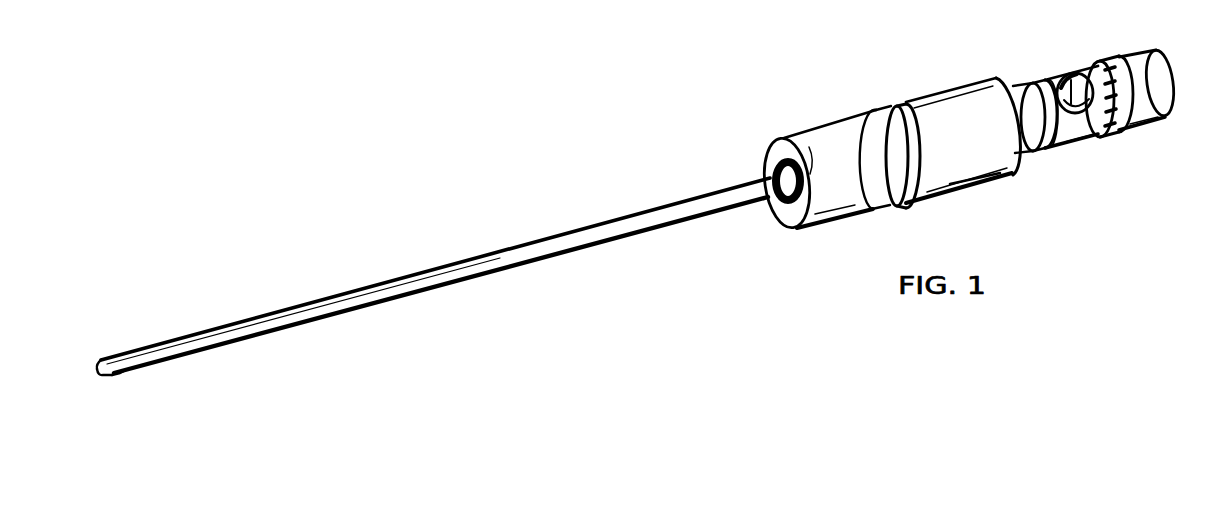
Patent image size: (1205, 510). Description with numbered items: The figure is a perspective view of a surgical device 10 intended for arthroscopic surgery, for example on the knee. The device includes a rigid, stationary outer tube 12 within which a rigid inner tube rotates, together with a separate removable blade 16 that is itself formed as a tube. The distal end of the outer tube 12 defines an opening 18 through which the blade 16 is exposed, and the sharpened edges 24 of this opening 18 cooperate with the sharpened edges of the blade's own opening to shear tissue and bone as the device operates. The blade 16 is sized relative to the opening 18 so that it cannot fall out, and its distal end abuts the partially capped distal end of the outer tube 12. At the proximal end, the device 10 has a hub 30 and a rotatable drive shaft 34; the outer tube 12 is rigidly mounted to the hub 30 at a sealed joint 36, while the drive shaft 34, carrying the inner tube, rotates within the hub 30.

The surgical device 10 is at (638, 170).
The outer tube 12 is at (511, 249).
The blade 16 is at (118, 376).
The opening 18 is at (100, 373).
The sharpened edges 24 is at (107, 359).
The hub 30 is at (921, 108).
The drive shaft 34 is at (1062, 80).
The sealed joint 36 is at (767, 177).